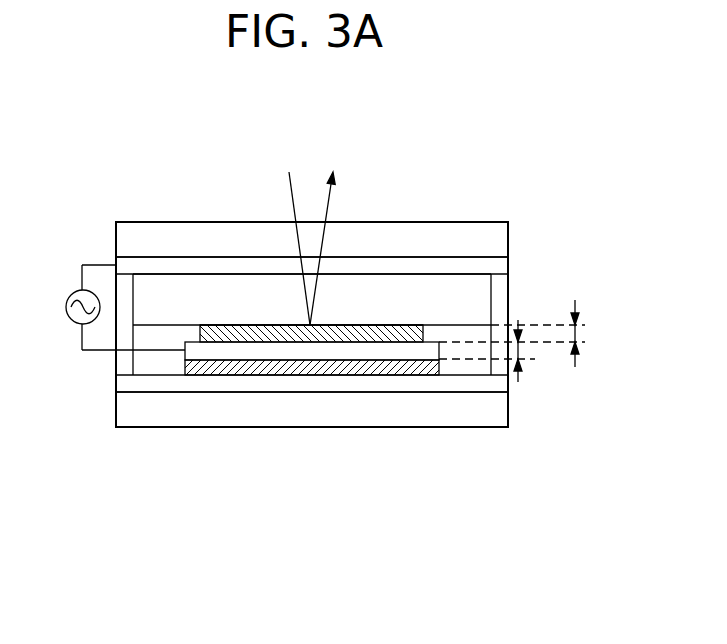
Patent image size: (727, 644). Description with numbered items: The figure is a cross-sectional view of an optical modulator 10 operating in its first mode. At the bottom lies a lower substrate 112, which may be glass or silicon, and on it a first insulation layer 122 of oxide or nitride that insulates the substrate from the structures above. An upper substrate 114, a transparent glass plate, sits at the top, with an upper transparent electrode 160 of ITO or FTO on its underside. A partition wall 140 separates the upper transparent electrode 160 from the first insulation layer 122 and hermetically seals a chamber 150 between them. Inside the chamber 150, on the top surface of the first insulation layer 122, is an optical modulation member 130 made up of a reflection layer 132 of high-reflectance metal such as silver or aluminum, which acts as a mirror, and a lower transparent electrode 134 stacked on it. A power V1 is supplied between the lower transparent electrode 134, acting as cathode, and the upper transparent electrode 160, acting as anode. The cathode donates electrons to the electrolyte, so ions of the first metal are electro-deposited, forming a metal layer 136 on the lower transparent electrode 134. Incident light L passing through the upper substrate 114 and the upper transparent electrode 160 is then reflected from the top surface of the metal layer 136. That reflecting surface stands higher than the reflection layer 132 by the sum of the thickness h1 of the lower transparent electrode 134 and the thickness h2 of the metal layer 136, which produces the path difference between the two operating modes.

The optical modulator 10 is at (491, 139).
The upper substrate 114 is at (500, 236).
The upper transparent electrode 160 is at (500, 270).
The partition wall 140 is at (500, 291).
The chamber 150 is at (406, 290).
The first insulation layer 122 is at (127, 382).
The lower substrate 112 is at (127, 411).
The optical modulation member 130 is at (302, 351).
The reflection layer 132 is at (225, 325).
The lower transparent electrode 134 is at (323, 350).
The metal layer 136 is at (418, 490).
The light L is at (291, 190).
The power V1 is at (111, 307).
The thickness of the lower transparent electrode h1 is at (497, 351).
The thickness of the metal layer h2 is at (527, 333).